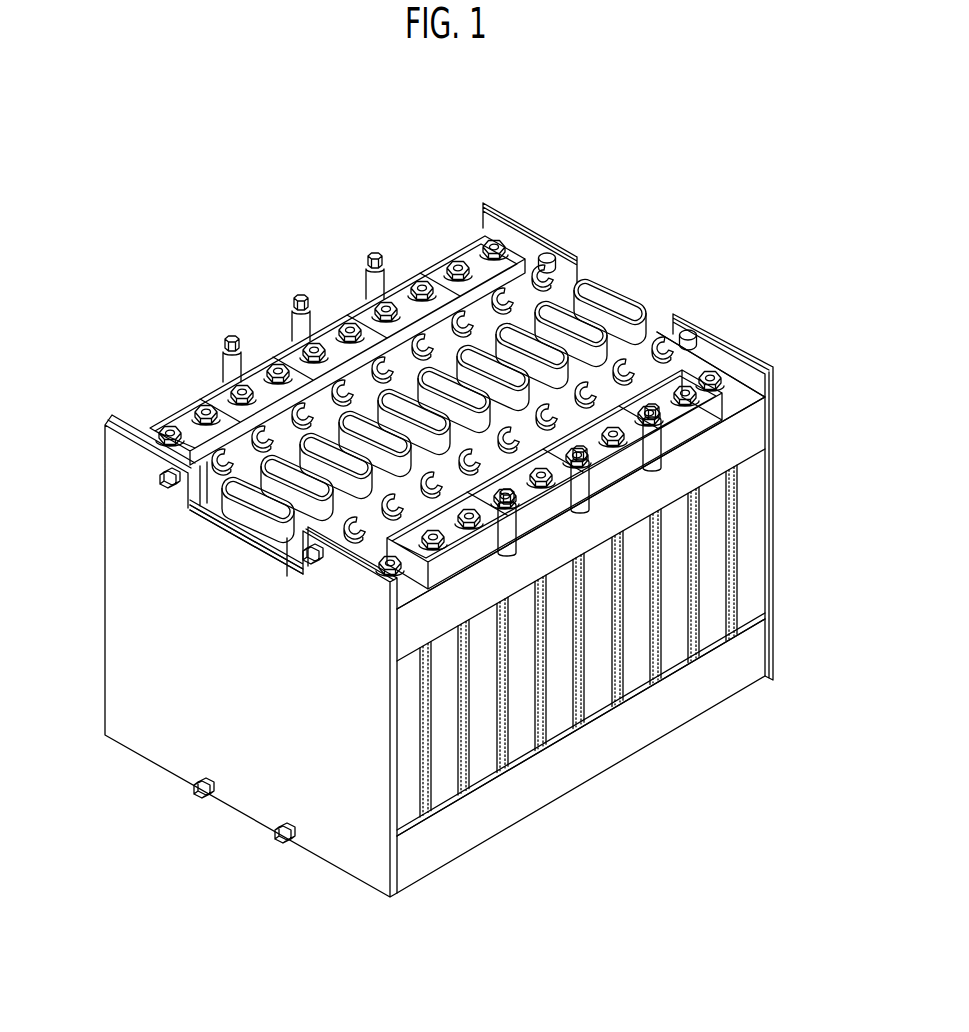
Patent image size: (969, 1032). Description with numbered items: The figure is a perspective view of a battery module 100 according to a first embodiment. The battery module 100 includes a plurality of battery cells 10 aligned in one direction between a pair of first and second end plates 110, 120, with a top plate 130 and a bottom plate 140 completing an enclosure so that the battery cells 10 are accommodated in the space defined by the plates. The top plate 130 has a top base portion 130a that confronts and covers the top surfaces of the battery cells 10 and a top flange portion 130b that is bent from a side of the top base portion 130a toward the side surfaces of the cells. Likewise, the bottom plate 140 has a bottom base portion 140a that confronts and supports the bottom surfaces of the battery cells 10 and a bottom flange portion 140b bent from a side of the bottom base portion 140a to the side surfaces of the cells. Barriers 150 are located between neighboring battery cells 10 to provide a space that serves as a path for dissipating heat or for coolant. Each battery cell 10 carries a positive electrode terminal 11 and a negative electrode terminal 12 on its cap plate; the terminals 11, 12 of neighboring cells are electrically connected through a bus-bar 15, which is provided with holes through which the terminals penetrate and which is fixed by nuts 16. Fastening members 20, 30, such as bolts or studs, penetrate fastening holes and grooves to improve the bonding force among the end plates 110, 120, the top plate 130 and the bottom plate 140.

The battery cell 10 is at (751, 592).
The positive electrode terminal 11 is at (494, 242).
The negative electrode terminal 12 is at (721, 372).
The bus-bar 15 is at (180, 420).
The nut 16 is at (243, 386).
The fastening member 20 is at (275, 835).
The fastening member 30 is at (228, 533).
The battery module 100 is at (291, 246).
The first end plate 110 is at (147, 657).
The second end plate 120 is at (776, 527).
The top plate 130 is at (836, 394).
The top base portion 130a is at (746, 399).
The top flange portion 130b is at (760, 433).
The bottom plate 140 is at (720, 786).
The bottom base portion 140a is at (598, 781).
The bottom flange portion 140b is at (643, 742).
The barrier 150 is at (696, 627).